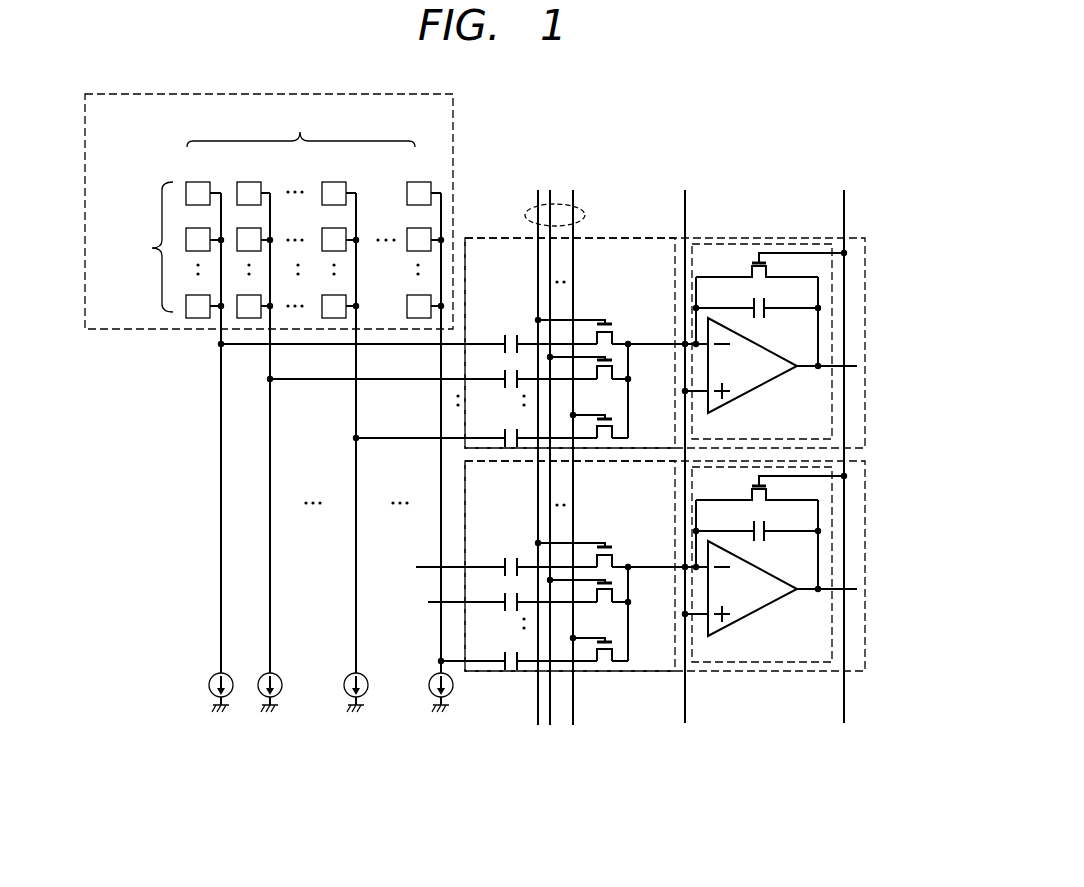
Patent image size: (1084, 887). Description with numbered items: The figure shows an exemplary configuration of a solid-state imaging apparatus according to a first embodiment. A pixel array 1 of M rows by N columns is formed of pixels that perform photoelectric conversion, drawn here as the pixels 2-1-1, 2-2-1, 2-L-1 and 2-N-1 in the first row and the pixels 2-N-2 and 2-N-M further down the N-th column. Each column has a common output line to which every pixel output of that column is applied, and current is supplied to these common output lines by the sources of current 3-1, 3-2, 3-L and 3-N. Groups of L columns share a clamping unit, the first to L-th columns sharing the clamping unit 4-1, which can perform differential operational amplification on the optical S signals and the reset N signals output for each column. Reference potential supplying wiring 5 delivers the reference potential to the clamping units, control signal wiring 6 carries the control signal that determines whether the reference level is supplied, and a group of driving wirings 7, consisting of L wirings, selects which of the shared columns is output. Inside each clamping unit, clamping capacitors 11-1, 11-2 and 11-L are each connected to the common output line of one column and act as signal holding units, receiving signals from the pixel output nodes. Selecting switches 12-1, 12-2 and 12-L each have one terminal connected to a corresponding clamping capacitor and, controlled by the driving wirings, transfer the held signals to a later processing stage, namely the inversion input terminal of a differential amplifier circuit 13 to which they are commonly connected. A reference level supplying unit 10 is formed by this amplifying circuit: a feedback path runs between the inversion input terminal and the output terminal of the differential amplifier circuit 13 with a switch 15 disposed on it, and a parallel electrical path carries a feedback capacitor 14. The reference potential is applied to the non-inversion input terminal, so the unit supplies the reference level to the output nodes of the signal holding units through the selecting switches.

The pixel array 1 is at (85, 131).
The pixel 2-1-1 is at (198, 182).
The pixel 2-2-1 is at (249, 182).
The pixel 2-L-1 is at (334, 182).
The pixel 2-N-1 is at (418, 182).
The pixel 2-N-2 is at (412, 229).
The pixel 2-N-M is at (412, 296).
The source of current 3-1 is at (213, 674).
The source of current 3-2 is at (262, 674).
The source of current 3-L is at (348, 674).
The source of current 3-N is at (433, 674).
The clamping unit 4-1 is at (865, 293).
The reference potential supplying wiring 5 is at (685, 232).
The control signal wiring 6 is at (844, 232).
The group of driving wirings 7 is at (578, 214).
The reference level supplying unit 10 is at (674, 274).
The clamping capacitor 11-1 is at (514, 334).
The clamping capacitor 11-2 is at (510, 370).
The clamping capacitor 11-L is at (510, 432).
The selecting switch 12-1 is at (615, 326).
The selecting switch 12-2 is at (615, 364).
The selecting switch 12-L is at (615, 424).
The differential amplifier circuit 13 is at (768, 388).
The feedback capacitor 14 is at (760, 320).
The switch 15 is at (750, 270).